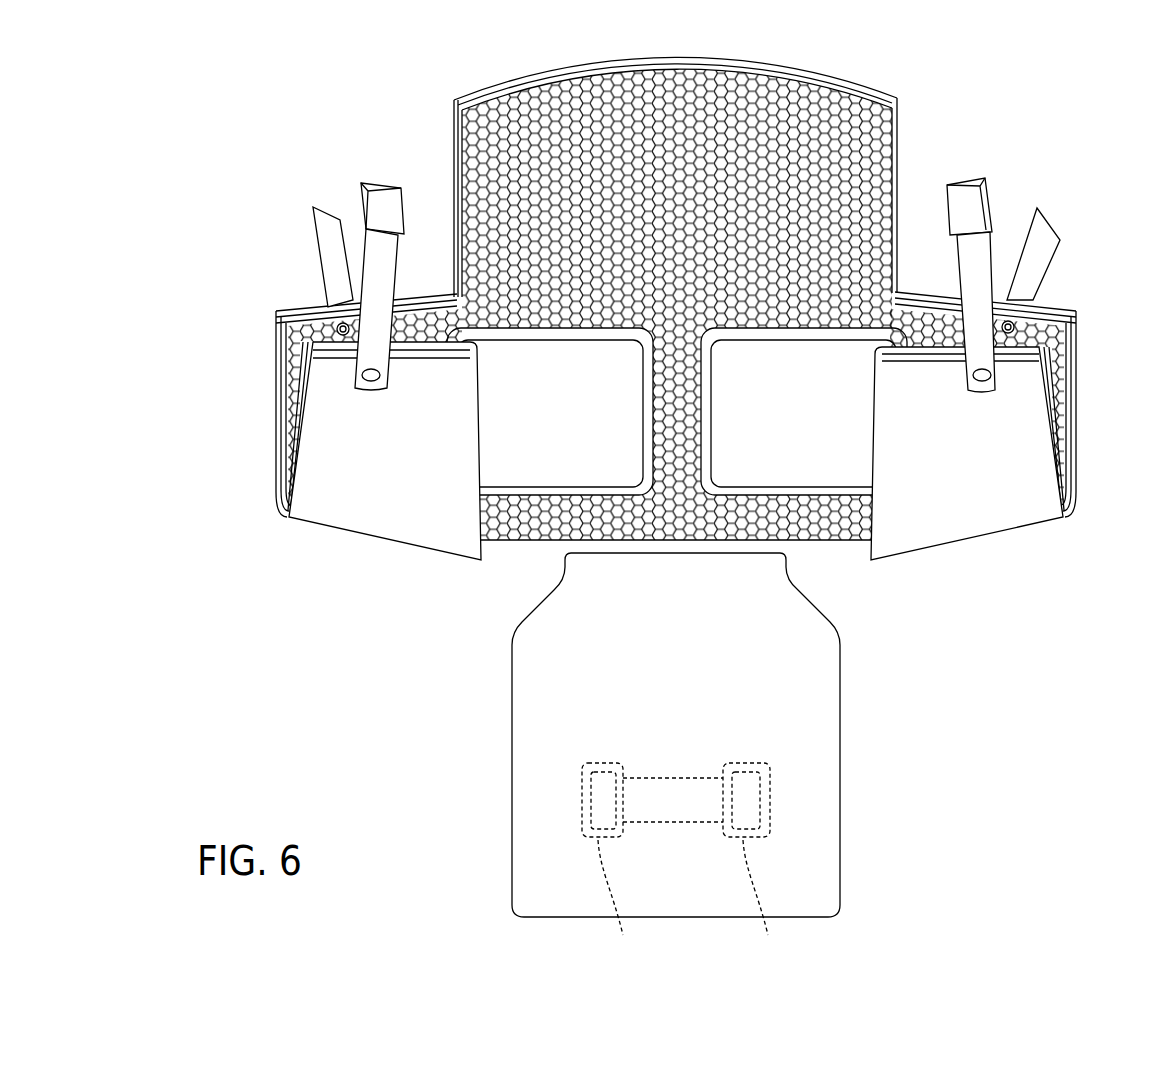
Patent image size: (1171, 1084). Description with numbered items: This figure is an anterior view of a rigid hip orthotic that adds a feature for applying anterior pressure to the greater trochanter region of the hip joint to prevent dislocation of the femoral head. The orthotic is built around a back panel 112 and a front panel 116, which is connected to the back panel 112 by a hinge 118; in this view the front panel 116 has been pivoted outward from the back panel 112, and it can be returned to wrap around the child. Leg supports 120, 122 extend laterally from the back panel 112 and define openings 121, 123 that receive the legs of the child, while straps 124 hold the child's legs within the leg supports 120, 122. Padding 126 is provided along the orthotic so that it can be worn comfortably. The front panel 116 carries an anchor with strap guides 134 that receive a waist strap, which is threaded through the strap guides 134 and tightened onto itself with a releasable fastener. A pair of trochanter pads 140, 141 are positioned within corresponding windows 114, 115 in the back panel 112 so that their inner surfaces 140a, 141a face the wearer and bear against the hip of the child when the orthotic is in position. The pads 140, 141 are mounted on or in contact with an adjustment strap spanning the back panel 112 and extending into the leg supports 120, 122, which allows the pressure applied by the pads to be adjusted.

The back panel 112 is at (733, 110).
The window 114 is at (779, 330).
The window 115 is at (573, 330).
The front panel 116 is at (807, 777).
The hinge 118 is at (757, 545).
The leg support 120 is at (986, 540).
The opening 121 is at (1062, 387).
The leg support 122 is at (360, 540).
The opening 123 is at (275, 382).
The strap 124 is at (338, 222).
The padding 126 is at (455, 140).
The strap guide 134 is at (684, 862).
The trochanter pad 140 is at (855, 376).
The inner surface 140a is at (827, 426).
The trochanter pad 141 is at (497, 376).
The inner surface 141a is at (585, 431).